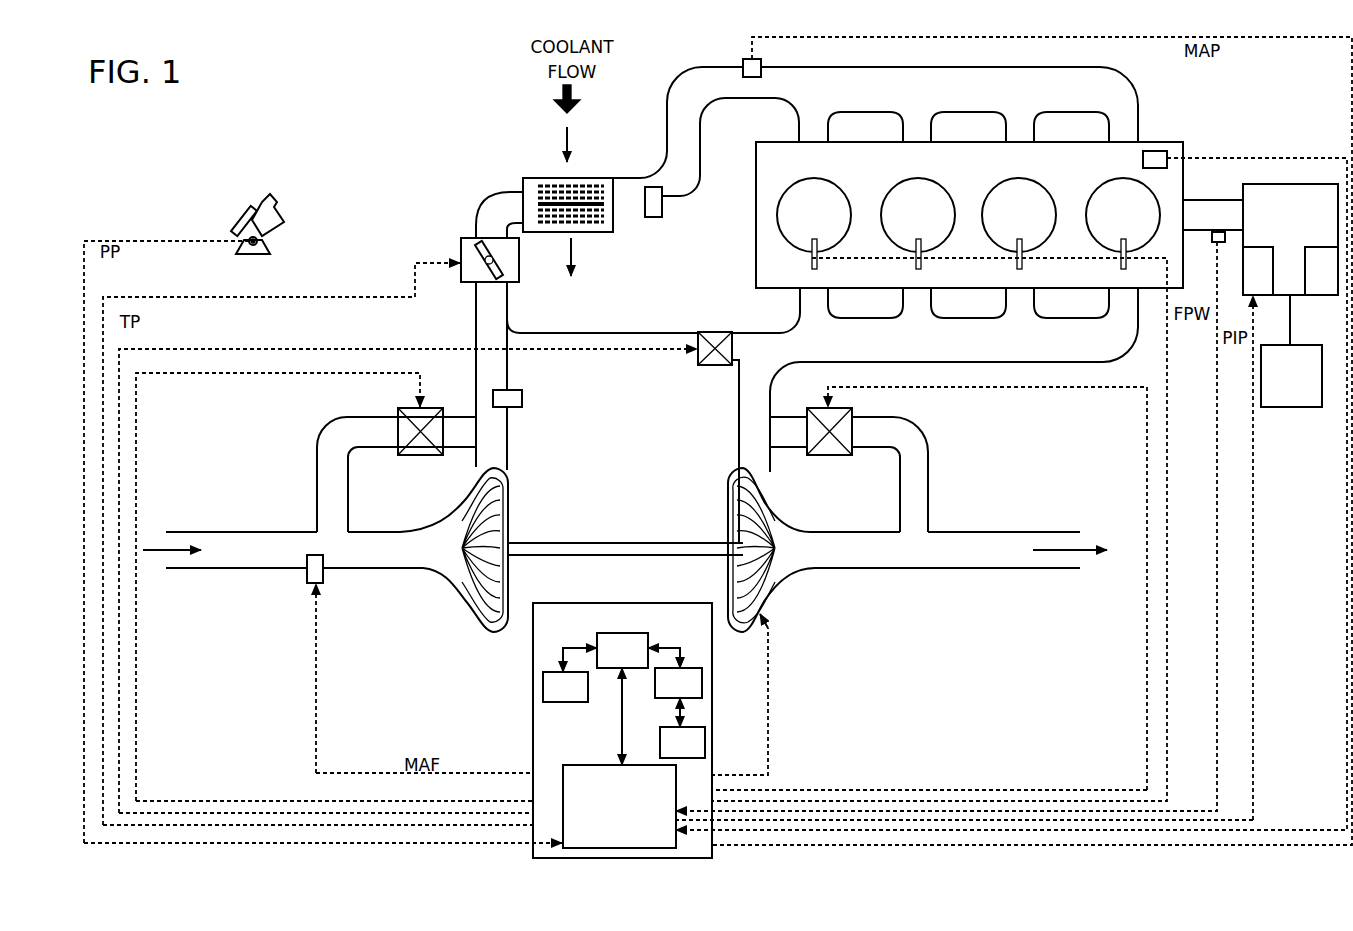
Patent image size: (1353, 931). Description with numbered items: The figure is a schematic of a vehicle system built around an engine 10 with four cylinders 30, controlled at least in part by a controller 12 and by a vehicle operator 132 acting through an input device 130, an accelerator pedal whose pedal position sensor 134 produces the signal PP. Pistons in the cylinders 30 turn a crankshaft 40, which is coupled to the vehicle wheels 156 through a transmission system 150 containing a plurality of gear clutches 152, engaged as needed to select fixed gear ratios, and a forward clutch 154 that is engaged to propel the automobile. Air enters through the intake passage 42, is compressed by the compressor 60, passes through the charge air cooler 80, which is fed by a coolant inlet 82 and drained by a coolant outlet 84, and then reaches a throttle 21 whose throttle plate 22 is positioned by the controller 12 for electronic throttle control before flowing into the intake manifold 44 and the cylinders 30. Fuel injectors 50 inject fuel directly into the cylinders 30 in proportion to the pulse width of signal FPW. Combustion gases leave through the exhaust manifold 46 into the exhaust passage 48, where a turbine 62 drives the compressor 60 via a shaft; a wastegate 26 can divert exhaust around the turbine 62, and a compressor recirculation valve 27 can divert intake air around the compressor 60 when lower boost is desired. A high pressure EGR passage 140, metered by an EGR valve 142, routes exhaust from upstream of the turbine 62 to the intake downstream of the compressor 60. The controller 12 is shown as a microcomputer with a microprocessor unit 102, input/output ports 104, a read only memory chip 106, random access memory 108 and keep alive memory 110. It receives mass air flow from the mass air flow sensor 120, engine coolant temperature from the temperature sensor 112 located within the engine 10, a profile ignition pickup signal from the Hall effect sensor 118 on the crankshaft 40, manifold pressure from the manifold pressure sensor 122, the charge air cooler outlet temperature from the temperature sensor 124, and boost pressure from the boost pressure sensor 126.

The engine 10 is at (969, 215).
The controller 12 is at (606, 730).
The throttle 21 is at (466, 238).
The throttle plate 22 is at (500, 270).
The wastegate 26 is at (852, 420).
The compressor recirculation valve 27 is at (398, 413).
The cylinders 30 is at (968, 215).
The crankshaft 40 is at (1203, 200).
The intake passage 42 is at (283, 550).
The intake manifold 44 is at (875, 131).
The exhaust manifold 46 is at (935, 380).
The exhaust passage 48 is at (958, 550).
The fuel injectors 50 is at (812, 262).
The compressor 60 is at (462, 590).
The turbine 62 is at (782, 503).
The charge air cooler 80 is at (530, 178).
The coolant inlet 82 is at (568, 142).
The coolant outlet 84 is at (574, 258).
The microprocessor unit 102 is at (597, 641).
The input/output ports 104 is at (619, 806).
The read only memory chip 106 is at (543, 698).
The random access memory 108 is at (702, 672).
The keep alive memory 110 is at (705, 731).
The temperature sensor 112 is at (1158, 150).
The Hall effect sensor 118 is at (1212, 243).
The mass air flow sensor 120 is at (325, 575).
The manifold pressure sensor 122 is at (743, 62).
The temperature sensor 124 is at (660, 217).
The boost pressure sensor 126 is at (522, 401).
The input device 130 is at (233, 216).
The vehicle operator 132 is at (280, 203).
The pedal position sensor 134 is at (262, 242).
The EGR passage 140 is at (606, 333).
The EGR valve 142 is at (716, 332).
The transmission system 150 is at (1290, 239).
The gear clutches 152 is at (975, 533).
The forward clutch 154 is at (1321, 271).
The vehicle wheels 156 is at (1291, 351).